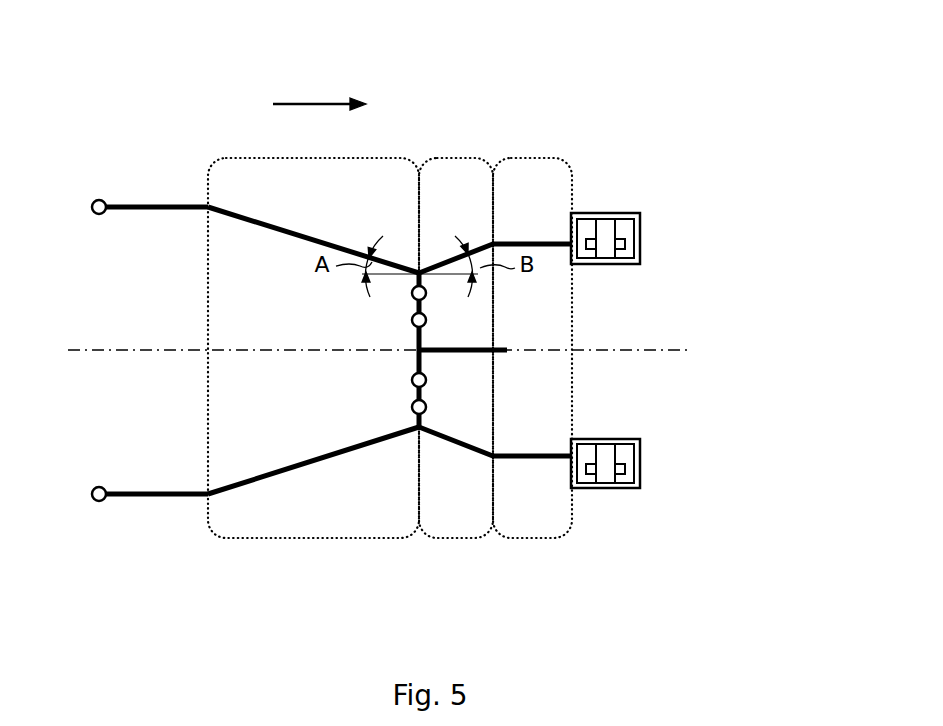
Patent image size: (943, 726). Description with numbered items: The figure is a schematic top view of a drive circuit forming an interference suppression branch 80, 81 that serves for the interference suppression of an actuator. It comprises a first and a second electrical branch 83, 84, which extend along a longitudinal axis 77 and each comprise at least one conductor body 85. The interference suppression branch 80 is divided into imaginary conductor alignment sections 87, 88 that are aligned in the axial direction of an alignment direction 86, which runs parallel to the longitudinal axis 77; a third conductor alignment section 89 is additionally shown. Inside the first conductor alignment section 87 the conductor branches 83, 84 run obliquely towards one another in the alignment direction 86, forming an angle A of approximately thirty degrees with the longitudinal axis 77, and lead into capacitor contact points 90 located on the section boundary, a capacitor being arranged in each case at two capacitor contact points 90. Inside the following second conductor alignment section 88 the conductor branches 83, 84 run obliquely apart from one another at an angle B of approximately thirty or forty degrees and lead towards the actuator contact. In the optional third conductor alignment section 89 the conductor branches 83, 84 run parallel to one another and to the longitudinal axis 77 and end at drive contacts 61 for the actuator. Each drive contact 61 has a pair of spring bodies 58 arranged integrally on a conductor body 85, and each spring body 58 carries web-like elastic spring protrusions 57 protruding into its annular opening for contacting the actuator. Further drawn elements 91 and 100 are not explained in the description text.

The spring protrusion 57 is at (645, 354).
The spring body 58 is at (695, 179).
The drive contact 61 is at (641, 236).
The longitudinal axis 77 is at (68, 350).
The interference suppression branch 80 is at (692, 299).
The interference suppression branch 81 is at (692, 299).
The first electrical branch 83 is at (150, 170).
The second electrical branch 84 is at (140, 498).
The conductor body 85 is at (136, 204).
The alignment direction 86 is at (313, 100).
The first conductor alignment section 87 is at (313, 511).
The second conductor alignment section 88 is at (457, 511).
The third conductor alignment section 89 is at (532, 511).
The capacitor contact point 90 is at (412, 320).
The connecting line 91 is at (419, 470).
The branch line 100 is at (462, 355).